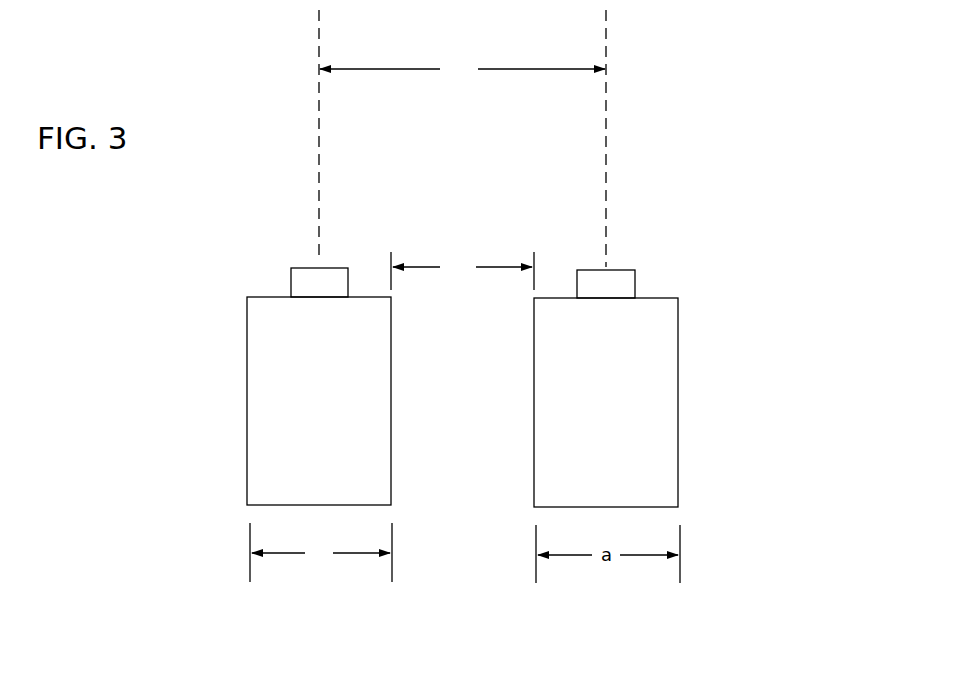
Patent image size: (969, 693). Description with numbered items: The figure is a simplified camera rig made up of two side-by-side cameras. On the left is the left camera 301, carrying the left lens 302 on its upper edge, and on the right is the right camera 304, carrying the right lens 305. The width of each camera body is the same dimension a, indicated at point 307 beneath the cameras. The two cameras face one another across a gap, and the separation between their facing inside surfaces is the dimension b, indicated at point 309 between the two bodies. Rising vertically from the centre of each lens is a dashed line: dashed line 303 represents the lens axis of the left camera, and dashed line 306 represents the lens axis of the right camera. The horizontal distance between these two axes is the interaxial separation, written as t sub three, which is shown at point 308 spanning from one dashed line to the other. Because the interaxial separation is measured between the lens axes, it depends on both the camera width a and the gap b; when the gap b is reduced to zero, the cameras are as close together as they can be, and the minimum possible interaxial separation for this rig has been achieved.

The left camera 301 is at (266, 393).
The left lens 302 is at (288, 277).
The dashed line (left lens axis) 303 is at (318, 30).
The right camera 304 is at (651, 477).
The right lens 305 is at (639, 265).
The dashed line (right lens axis) 306 is at (608, 34).
The point indicating camera width 307 is at (317, 585).
The point indicating interaxial separation 308 is at (564, 75).
The point indicating camera separation 309 is at (459, 242).